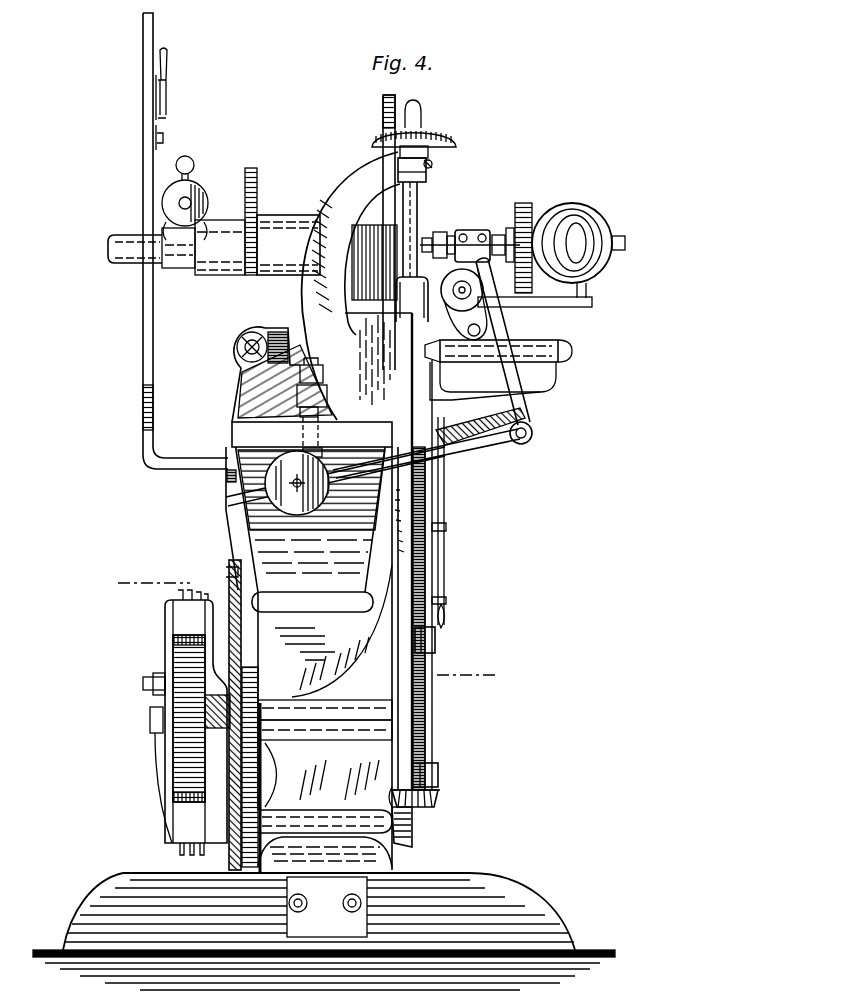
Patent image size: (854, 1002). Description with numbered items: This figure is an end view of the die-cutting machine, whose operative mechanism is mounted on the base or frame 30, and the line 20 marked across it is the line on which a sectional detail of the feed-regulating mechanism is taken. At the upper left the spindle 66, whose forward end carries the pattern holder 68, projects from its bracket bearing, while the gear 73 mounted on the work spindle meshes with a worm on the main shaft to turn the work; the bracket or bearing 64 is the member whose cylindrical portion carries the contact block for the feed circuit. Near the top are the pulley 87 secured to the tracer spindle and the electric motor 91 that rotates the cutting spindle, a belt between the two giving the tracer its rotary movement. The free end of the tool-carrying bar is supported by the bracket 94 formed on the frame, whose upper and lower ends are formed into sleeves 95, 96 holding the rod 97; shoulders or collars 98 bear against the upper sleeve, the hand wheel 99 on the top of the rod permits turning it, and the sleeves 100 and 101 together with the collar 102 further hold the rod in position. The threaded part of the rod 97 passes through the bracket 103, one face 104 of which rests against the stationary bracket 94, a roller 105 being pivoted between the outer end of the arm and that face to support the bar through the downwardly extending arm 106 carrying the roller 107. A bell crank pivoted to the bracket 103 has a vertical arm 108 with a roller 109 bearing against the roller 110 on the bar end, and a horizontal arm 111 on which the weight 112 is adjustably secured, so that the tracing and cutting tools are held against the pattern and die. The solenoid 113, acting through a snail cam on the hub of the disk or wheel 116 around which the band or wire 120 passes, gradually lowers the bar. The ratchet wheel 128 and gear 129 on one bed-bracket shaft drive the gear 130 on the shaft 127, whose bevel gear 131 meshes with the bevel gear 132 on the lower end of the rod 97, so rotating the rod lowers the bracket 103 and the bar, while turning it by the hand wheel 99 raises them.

The section line 20 is at (306, 629).
The base or frame 30 is at (322, 687).
The bracket or bearing 64 is at (281, 230).
The spindle 66 is at (126, 246).
The pattern holder 68 is at (396, 108).
The gear 73 is at (257, 183).
The pulley 87 is at (529, 210).
The electric motor 91 is at (600, 226).
The bracket 94 is at (339, 183).
The upper sleeve 95 is at (430, 167).
The lower sleeve 96 is at (438, 779).
The rod 97 is at (418, 207).
The shoulders or collars 98 is at (395, 153).
The hand wheel 99 is at (441, 135).
The sleeve 100 is at (408, 303).
The sleeve 101 is at (436, 650).
The collar 102 is at (434, 246).
The bracket 103 is at (553, 370).
The face 104 is at (428, 398).
The roller 105 is at (556, 342).
The downwardly extending arm 106 is at (478, 288).
The roller 107 is at (480, 331).
The vertical arm 108 is at (525, 392).
The roller 109 is at (488, 229).
The roller 110 is at (461, 278).
The horizontal arm 111 is at (228, 512).
The weight 112 is at (223, 488).
The solenoid 113 is at (158, 702).
The disk or wheel 116 is at (232, 851).
The band or wire 120 is at (229, 582).
The shaft 127 is at (261, 823).
The ratchet wheel 128 is at (178, 656).
The gear 129 is at (260, 686).
The gear 130 is at (259, 802).
The bevel gear 131 is at (411, 833).
The bevel gear 132 is at (437, 802).